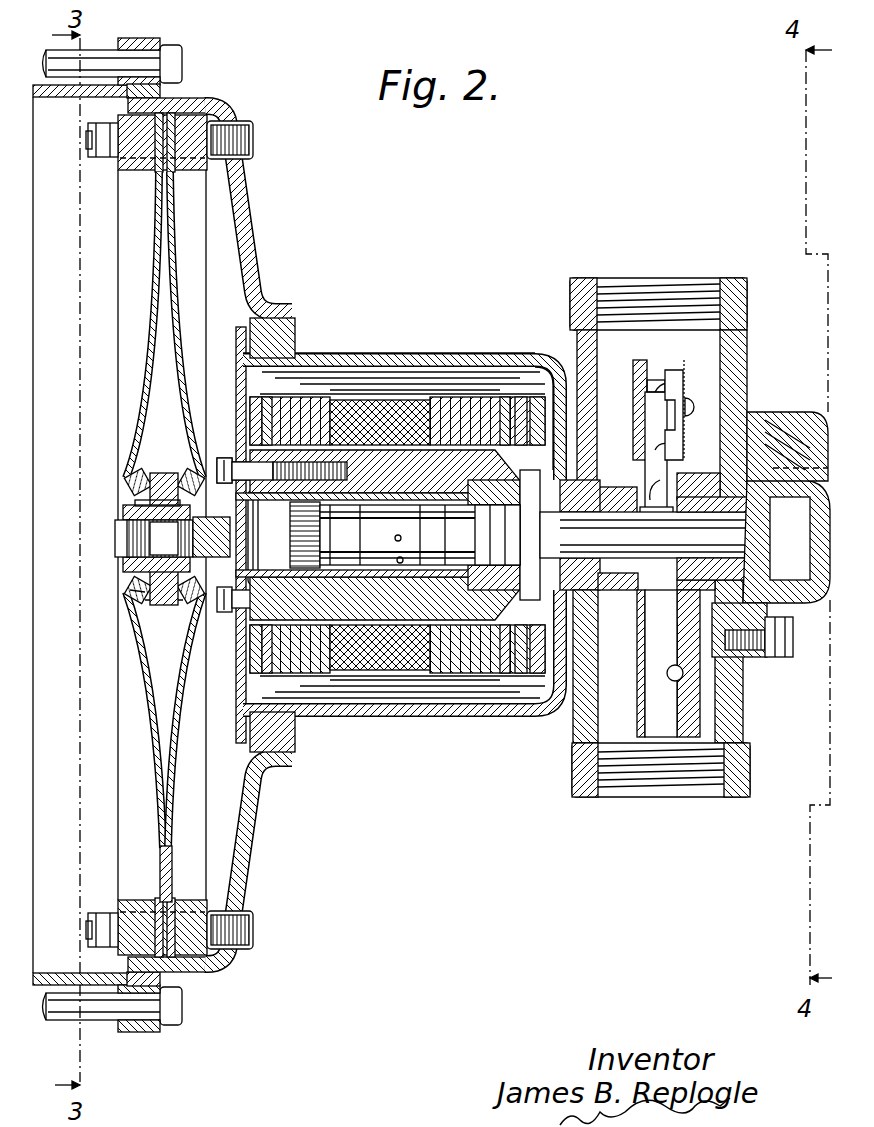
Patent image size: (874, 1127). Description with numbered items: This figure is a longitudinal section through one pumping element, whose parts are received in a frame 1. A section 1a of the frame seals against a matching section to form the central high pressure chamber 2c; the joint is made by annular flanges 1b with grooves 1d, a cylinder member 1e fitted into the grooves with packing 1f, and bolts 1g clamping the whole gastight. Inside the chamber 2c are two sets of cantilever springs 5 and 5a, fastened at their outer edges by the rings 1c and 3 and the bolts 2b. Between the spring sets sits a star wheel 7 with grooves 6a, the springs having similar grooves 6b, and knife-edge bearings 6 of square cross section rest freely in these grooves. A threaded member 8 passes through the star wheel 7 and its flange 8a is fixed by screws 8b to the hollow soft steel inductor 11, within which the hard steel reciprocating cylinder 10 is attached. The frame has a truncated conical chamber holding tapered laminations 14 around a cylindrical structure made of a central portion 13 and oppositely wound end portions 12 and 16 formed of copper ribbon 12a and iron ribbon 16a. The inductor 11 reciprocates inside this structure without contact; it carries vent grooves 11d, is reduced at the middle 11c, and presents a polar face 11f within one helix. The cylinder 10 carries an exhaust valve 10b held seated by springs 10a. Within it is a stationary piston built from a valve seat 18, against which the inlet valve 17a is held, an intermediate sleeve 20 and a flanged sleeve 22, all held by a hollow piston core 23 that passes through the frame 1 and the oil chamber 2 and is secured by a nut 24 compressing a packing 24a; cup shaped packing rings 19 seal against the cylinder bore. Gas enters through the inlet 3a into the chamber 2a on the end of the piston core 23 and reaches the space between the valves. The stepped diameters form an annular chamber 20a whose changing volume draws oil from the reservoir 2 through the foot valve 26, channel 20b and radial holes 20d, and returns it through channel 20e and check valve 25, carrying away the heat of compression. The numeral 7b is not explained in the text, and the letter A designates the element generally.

The frame 1 is at (535, 357).
The frame section 1a is at (246, 230).
The annular flange 1b is at (148, 40).
The ring 1c is at (236, 170).
The groove 1d is at (178, 102).
The cylinder member 1e is at (92, 87).
The packing 1f is at (165, 86).
The bolt 1g is at (152, 66).
The oil reservoir 2 is at (713, 360).
The gas supply chamber 2a is at (800, 580).
The bolt 2b is at (88, 140).
The central chamber 2c is at (100, 230).
The ring 3 is at (120, 160).
The inlet 3a is at (783, 418).
The cantilever spring 5 is at (150, 770).
The cantilever spring 5a is at (172, 740).
The knife-edge bearing 6 is at (143, 470).
The groove 6a is at (170, 602).
The groove 6b is at (128, 592).
The star wheel 7 is at (157, 577).
The hub bore 7b is at (165, 538).
The threaded member 8 is at (128, 533).
The flange 8a is at (232, 640).
The screw 8b is at (224, 456).
The reciprocating cylinder 10 is at (382, 625).
The spring 10a is at (211, 537).
The exhaust valve 10b is at (148, 505).
The inductor 11 is at (405, 455).
The reduced middle portion 11c is at (440, 403).
The groove 11d is at (518, 540).
The polar face 11f is at (246, 375).
The end portion 12 is at (292, 398).
The copper ribbon 12a is at (284, 397).
The central portion 13 is at (385, 408).
The tapered lamination 14 is at (365, 380).
The end portion 16 is at (478, 397).
The iron ribbon 16a is at (333, 400).
The inlet valve 17a is at (247, 590).
The valve seat 18 is at (305, 535).
The packing ring 19 is at (420, 535).
The intermediate sleeve 20 is at (420, 535).
The annular chamber 20a is at (356, 660).
The channel 20b is at (623, 573).
The radial hole 20d is at (398, 557).
The channel 20e is at (618, 492).
The flanged sleeve 22 is at (497, 535).
The hollow piston core 23 is at (655, 535).
The nut 24 is at (773, 568).
The packing 24a is at (702, 505).
The check valve 25 is at (688, 383).
The foot valve 26 is at (690, 700).
The motor unit A is at (389, 298).